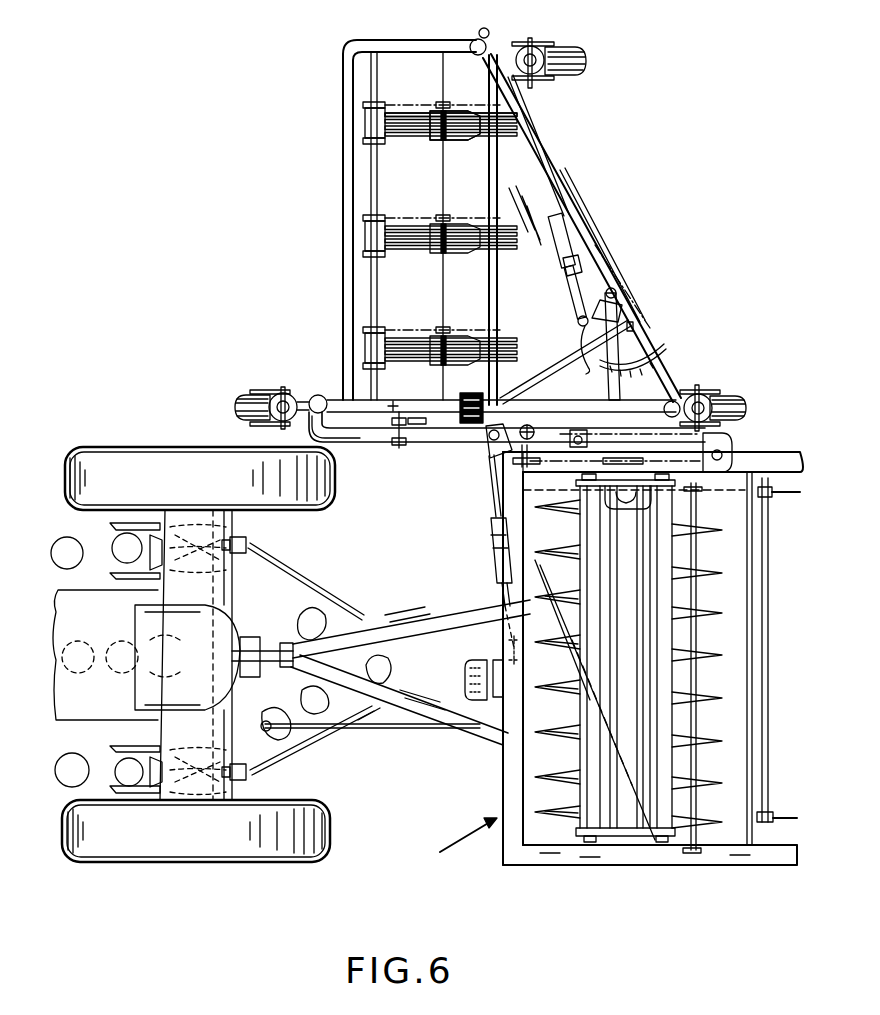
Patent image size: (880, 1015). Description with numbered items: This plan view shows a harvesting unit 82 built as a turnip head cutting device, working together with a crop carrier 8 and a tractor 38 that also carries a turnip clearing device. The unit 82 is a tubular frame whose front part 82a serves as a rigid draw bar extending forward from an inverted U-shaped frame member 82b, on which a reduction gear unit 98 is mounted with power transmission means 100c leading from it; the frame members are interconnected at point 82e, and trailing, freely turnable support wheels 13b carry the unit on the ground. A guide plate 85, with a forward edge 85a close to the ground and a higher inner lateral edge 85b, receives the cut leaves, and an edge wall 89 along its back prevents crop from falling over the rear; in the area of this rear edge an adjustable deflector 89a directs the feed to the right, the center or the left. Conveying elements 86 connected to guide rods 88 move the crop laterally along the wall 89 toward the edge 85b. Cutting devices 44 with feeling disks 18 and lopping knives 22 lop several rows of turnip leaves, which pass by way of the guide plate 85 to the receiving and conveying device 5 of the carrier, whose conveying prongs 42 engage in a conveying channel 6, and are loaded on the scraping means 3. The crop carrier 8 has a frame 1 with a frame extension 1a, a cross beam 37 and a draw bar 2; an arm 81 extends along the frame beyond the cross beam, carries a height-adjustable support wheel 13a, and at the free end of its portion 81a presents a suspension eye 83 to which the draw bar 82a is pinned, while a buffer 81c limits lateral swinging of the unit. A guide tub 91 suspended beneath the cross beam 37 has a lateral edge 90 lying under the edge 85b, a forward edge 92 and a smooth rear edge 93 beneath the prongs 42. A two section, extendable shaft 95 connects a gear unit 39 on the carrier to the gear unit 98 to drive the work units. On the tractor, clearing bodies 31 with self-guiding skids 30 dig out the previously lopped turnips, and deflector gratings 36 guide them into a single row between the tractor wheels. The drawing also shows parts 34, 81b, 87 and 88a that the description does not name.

The frame 1 is at (748, 874).
The frame extension 1a is at (549, 866).
The draw bar 2 is at (412, 614).
The scraping means 3 is at (800, 497).
The conveying device 5 is at (582, 611).
The conveying channel 6 is at (737, 644).
The crop carrier 8 is at (462, 838).
The support wheel 13a is at (278, 392).
The support wheels 13b is at (548, 44).
The feeling disks 18 is at (405, 112).
The lopping knives 22 is at (468, 112).
The guide skids 30 is at (118, 528).
The clearing bodies 31 is at (197, 794).
The tractor wheel 34 is at (200, 478).
The deflector gratings 36 is at (297, 576).
The cross beam 37 is at (512, 750).
The tractor 38 is at (232, 598).
The gear unit 39 is at (497, 656).
The conveying prongs 42 is at (707, 573).
The cutting devices 44 is at (420, 136).
The arm 81 is at (427, 445).
The arm 81a is at (348, 443).
The tube clamp 81b is at (396, 446).
The buffer 81c is at (415, 417).
The harvesting unit 82 is at (583, 252).
The draw bar 82a is at (332, 398).
The inverted U-shaped frame 82b is at (563, 410).
The interconnection point 82e is at (666, 392).
The suspension eye 83 is at (307, 396).
The guide plate 85 is at (482, 197).
The forward edge 85a is at (440, 263).
The inner lateral edge 85b is at (480, 456).
The conveying elements 86 is at (527, 230).
The guide bar 87 is at (560, 213).
The guide rods 88 is at (567, 288).
The cylinder hook 88a is at (587, 364).
The edge wall 89 is at (540, 172).
The adjustable deflector 89a is at (622, 314).
The lateral edge 90 is at (468, 497).
The guide tub 91 is at (540, 527).
The forward edge 92 is at (482, 535).
The rear edge 93 is at (680, 816).
The two section shaft 95 is at (492, 560).
The reduction gear unit 98 is at (458, 398).
The power transmission means 100c is at (618, 281).